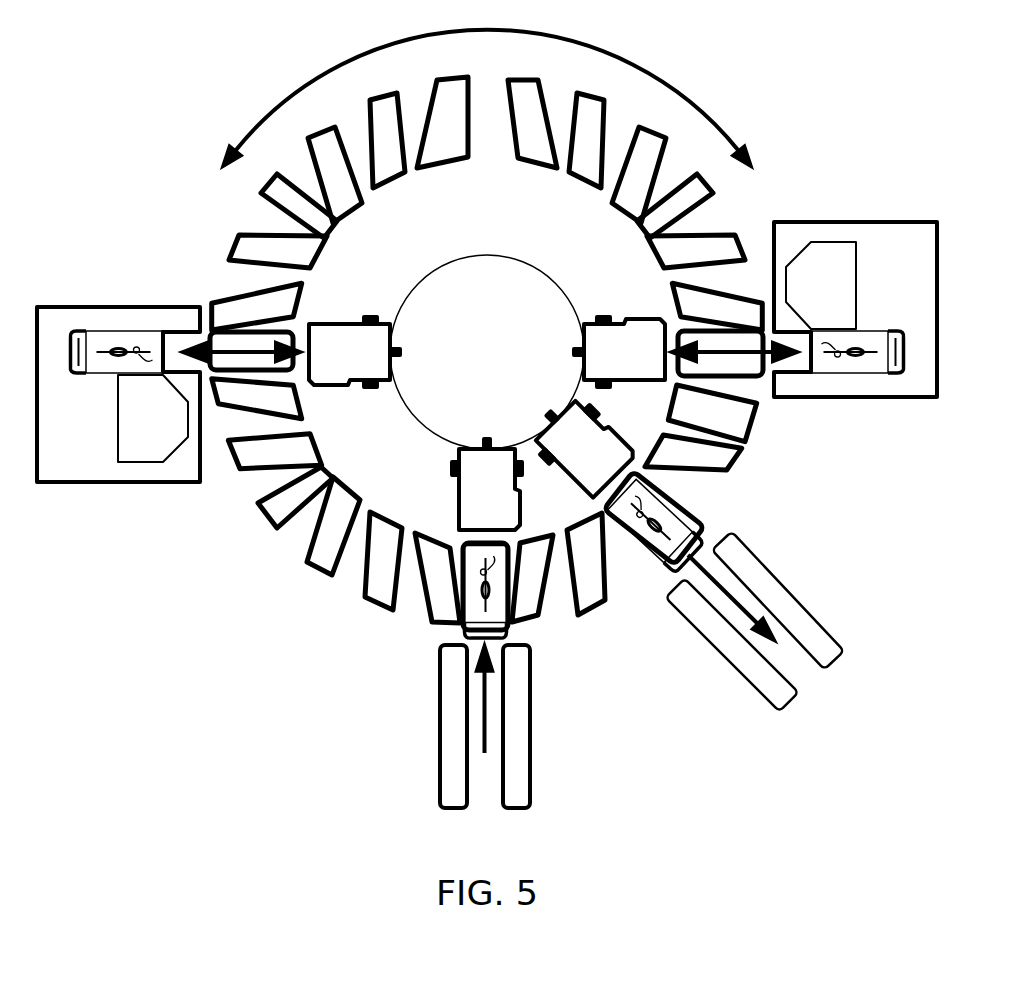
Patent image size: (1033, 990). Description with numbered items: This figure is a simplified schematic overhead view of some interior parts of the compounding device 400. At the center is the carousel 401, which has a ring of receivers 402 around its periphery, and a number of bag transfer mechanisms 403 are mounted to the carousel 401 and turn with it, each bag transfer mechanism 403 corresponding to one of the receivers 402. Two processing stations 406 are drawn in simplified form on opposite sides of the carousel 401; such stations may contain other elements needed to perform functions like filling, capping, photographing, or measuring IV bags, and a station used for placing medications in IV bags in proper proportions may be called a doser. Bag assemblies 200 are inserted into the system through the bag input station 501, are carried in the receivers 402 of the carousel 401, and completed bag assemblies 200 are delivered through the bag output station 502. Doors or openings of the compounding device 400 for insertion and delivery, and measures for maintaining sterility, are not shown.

The compounding device 400 is at (212, 36).
The carousel 401 is at (442, 371).
The receivers 402 is at (358, 571).
The bag transfer mechanisms 403 is at (615, 350).
The processing stations 406 is at (112, 500).
The bag assemblies 200 is at (113, 340).
The bag input station 501 is at (392, 779).
The bag output station 502 is at (721, 694).